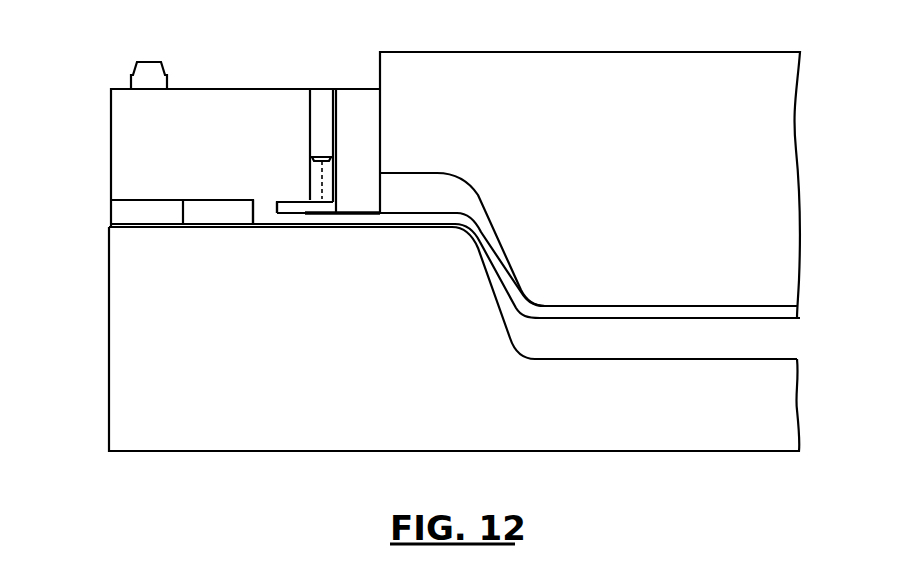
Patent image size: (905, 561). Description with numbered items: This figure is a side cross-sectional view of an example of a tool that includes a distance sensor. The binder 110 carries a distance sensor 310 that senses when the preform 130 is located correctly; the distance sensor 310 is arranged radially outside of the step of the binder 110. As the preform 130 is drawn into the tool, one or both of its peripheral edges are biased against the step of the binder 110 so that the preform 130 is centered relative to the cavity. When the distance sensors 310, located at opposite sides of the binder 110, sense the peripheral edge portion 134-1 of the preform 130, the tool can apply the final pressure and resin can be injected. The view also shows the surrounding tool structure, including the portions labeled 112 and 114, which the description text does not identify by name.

The upper housing block 112 is at (548, 51).
The binder 110 is at (110, 141).
The distance sensor 310 is at (318, 127).
The peripheral edge portion 134-1 is at (263, 207).
The preform 130 is at (287, 216).
The lower body 114 is at (108, 387).